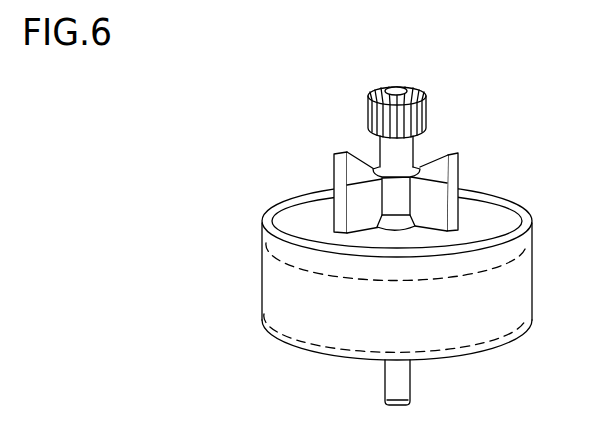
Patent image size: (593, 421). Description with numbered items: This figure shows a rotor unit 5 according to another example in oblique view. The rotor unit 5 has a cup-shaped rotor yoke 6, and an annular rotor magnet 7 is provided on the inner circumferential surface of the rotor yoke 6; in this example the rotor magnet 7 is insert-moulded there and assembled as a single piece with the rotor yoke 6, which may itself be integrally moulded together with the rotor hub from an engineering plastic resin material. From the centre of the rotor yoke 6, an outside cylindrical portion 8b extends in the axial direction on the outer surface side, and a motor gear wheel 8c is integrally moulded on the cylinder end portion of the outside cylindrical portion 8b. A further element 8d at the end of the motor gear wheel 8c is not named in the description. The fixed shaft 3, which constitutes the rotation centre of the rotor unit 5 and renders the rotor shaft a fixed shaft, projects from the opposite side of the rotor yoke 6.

The rotor unit 5 is at (287, 133).
The rotor yoke 6 is at (297, 210).
The rotor magnet 7 is at (272, 273).
The fixed shaft 3 is at (410, 385).
The outside cylindrical portion 8b is at (382, 155).
The motor gear wheel 8c is at (425, 108).
The boss 8d is at (392, 88).